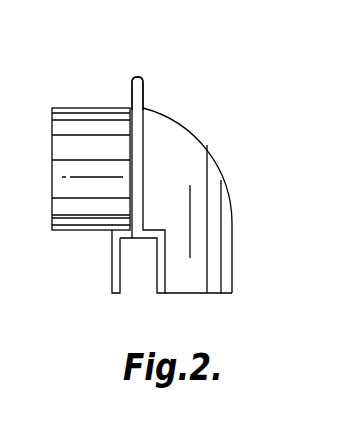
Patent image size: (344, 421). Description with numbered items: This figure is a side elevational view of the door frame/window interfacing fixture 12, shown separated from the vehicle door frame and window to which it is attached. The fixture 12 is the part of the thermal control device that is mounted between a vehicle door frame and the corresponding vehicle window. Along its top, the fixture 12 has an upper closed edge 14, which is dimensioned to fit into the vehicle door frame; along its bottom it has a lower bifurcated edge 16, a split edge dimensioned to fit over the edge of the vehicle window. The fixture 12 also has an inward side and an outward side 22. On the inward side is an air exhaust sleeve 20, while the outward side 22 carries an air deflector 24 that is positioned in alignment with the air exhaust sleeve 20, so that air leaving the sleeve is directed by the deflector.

The door frame/window interfacing fixture 12 is at (162, 172).
The upper closed edge 14 is at (137, 77).
The lower bifurcated edge 16 is at (135, 280).
The air exhaust sleeve 20 is at (91, 217).
The outward side 22 is at (135, 174).
The air deflector 24 is at (213, 262).